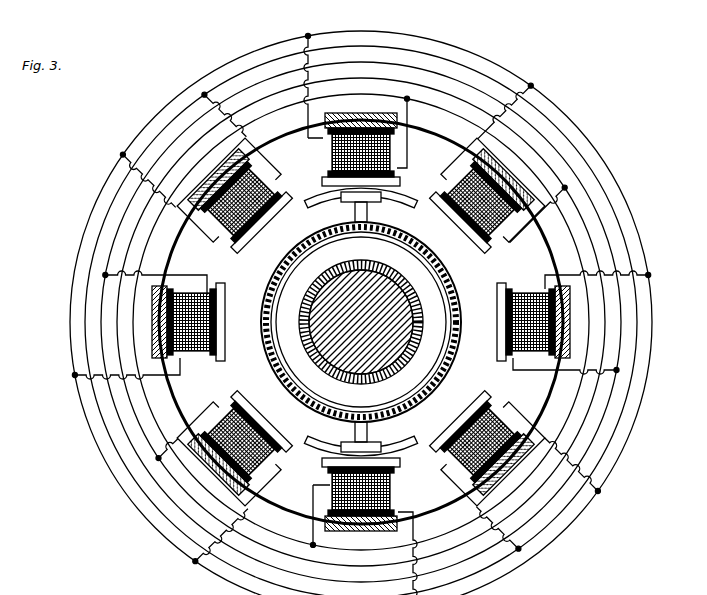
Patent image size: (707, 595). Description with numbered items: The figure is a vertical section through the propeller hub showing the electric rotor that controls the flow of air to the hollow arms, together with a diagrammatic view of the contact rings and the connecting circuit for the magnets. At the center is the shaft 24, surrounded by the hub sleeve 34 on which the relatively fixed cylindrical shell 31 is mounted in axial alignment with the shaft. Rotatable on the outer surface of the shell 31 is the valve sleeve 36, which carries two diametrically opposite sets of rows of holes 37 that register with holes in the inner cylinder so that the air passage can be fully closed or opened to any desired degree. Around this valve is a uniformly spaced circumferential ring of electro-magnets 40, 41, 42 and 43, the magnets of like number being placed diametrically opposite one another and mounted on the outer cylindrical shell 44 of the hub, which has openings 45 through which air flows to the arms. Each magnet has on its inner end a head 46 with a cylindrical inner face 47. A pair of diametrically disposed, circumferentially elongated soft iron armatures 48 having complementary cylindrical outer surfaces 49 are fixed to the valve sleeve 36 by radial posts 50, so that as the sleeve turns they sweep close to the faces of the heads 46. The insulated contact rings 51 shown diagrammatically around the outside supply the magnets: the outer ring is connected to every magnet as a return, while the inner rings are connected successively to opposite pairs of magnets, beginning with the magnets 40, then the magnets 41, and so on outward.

The shaft 24 is at (352, 376).
The cylindrical shell 31 is at (279, 262).
The hub sleeve 34 is at (400, 376).
The valve sleeve 36 is at (293, 247).
The rows of holes 37 is at (263, 352).
The electro-magnet 40 is at (333, 157).
The electro-magnet 41 is at (462, 192).
The electro-magnet 42 is at (517, 292).
The electro-magnet 43 is at (228, 237).
The outer cylindrical shell 44 is at (362, 545).
The openings 45 is at (440, 140).
The head 46 is at (450, 214).
The cylindrical inner face 47 is at (468, 232).
The armature 48 is at (320, 200).
The cylindrical outer surface 49 is at (413, 178).
The radial post 50 is at (372, 212).
The contact ring 51 is at (583, 522).